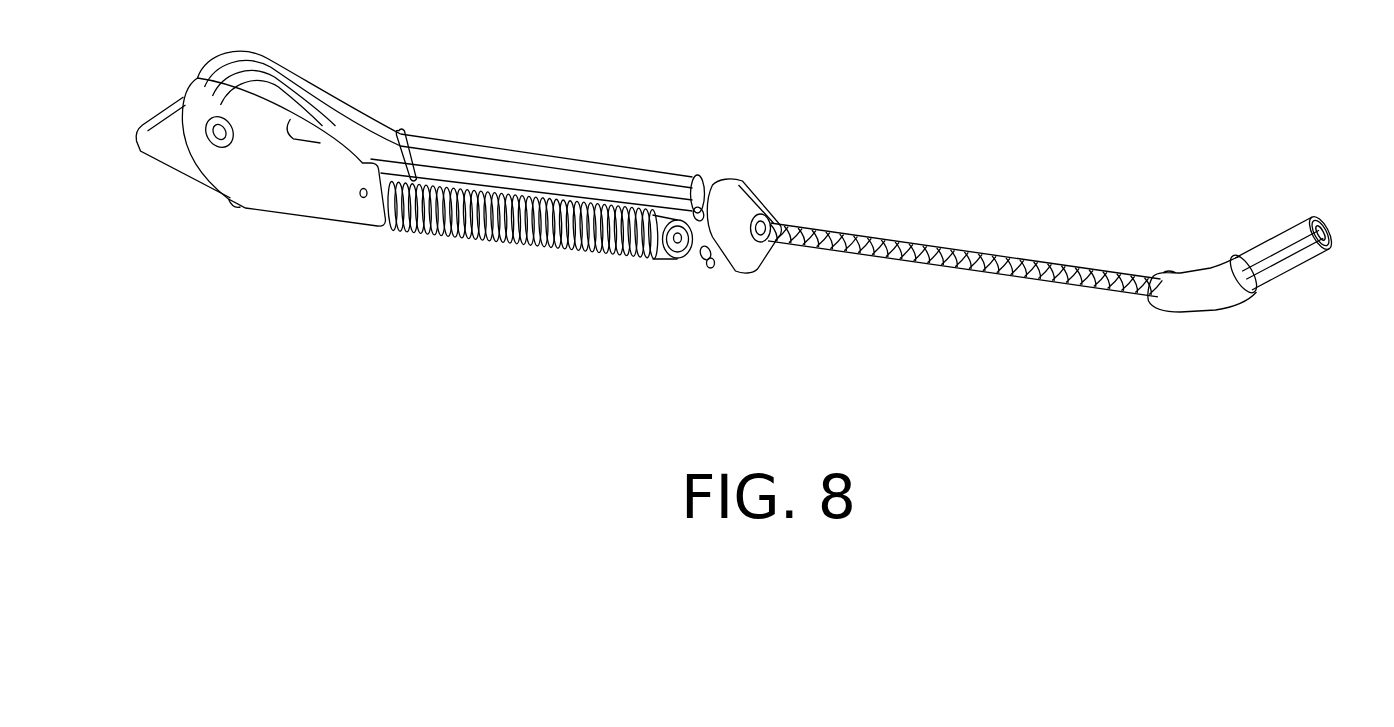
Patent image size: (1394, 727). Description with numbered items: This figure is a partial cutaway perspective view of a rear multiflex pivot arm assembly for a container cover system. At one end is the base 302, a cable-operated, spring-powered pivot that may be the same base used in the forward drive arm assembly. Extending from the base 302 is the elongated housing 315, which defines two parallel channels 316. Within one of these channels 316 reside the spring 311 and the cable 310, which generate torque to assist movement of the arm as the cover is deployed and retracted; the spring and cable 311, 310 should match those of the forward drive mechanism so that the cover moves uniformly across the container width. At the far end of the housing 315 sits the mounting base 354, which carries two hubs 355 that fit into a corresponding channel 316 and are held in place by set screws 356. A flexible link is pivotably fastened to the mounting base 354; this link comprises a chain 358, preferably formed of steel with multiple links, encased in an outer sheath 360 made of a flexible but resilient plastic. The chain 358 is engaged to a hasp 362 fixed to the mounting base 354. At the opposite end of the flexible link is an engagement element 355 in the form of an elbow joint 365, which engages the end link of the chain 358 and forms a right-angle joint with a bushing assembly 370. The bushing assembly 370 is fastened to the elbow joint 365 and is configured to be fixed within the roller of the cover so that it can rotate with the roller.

The base 302 is at (230, 195).
The cable 310 is at (523, 246).
The spring 311 is at (523, 238).
The elongated housing 315 is at (612, 172).
The channels 316 is at (680, 190).
The mounting base 354 is at (737, 200).
The hubs 355 is at (712, 190).
The set screws 356 is at (707, 264).
The chain 358 is at (997, 252).
The outer sheath 360 is at (965, 247).
The hasp 362 is at (773, 222).
The elbow joint 365 is at (1193, 298).
The bushing assembly 370 is at (1295, 267).